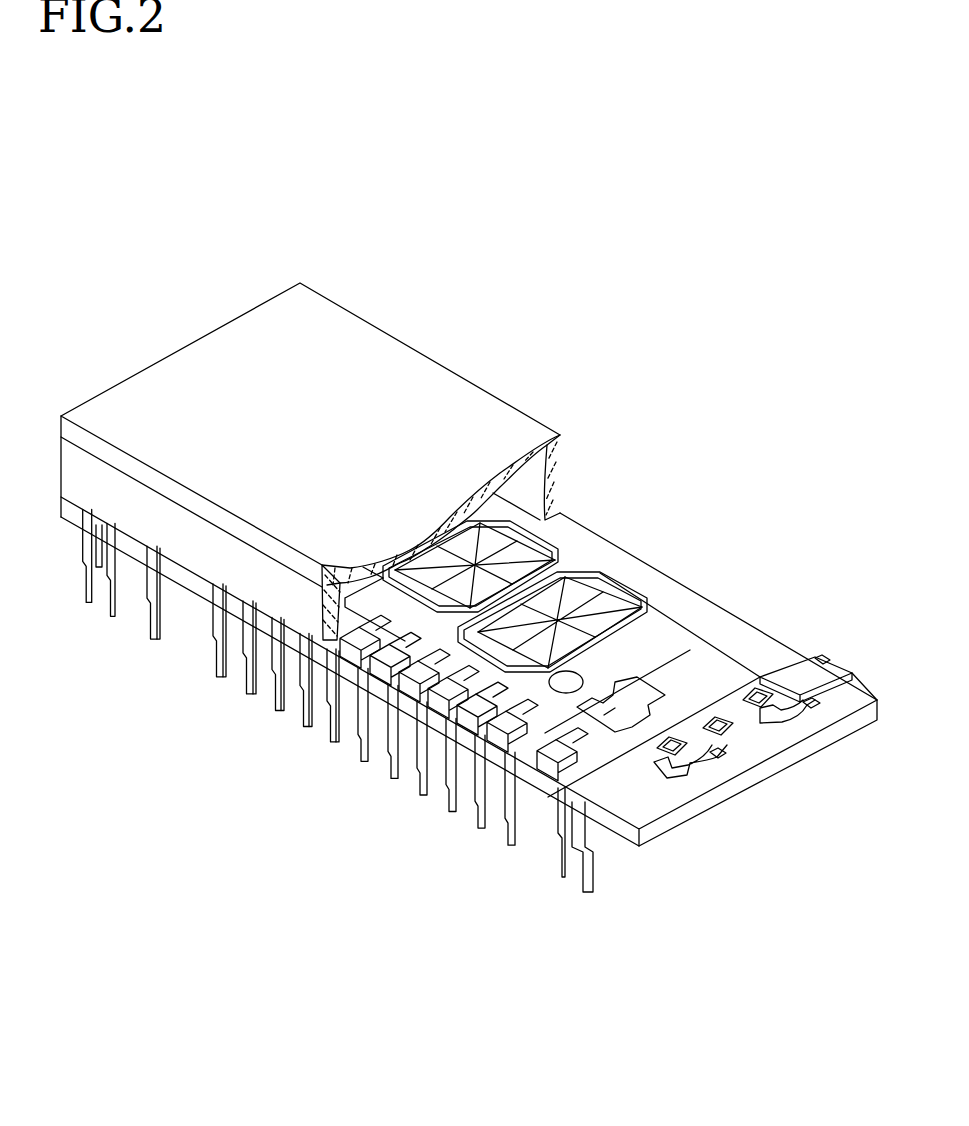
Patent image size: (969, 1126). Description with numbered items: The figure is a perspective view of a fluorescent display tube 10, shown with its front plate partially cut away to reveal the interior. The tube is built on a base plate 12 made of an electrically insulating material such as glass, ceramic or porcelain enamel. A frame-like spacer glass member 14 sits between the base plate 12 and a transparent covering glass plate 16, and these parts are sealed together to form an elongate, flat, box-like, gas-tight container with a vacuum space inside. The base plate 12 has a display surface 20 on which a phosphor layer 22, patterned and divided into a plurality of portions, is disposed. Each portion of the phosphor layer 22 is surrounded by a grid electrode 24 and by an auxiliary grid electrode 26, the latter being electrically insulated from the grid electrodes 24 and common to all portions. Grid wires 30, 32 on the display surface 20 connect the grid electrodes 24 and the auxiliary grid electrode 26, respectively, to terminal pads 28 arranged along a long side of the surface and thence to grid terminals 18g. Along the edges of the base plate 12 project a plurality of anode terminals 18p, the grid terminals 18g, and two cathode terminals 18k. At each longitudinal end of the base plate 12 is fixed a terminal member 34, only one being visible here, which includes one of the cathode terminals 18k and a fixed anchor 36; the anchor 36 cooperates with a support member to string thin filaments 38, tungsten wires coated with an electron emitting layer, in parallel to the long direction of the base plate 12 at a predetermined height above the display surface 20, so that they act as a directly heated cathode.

The fluorescent display tube 10 is at (661, 371).
The base plate 12 is at (780, 760).
The spacer glass member 14 is at (212, 565).
The transparent covering glass plate 16 is at (440, 405).
The cathode terminals 18k is at (88, 588).
The grid terminals 18g is at (217, 667).
The anode terminals 18p is at (307, 715).
The display surface 20 is at (790, 658).
The phosphor layer 22 is at (647, 687).
The grid electrode 24 is at (617, 612).
The auxiliary grid electrode 26 is at (553, 570).
The terminal pads 28 is at (578, 738).
The grid wires 30 is at (363, 567).
The grid wires 32 is at (493, 703).
The terminal member 34 is at (818, 688).
The fixed anchor 36 is at (710, 784).
The thin filaments 38 is at (733, 657).